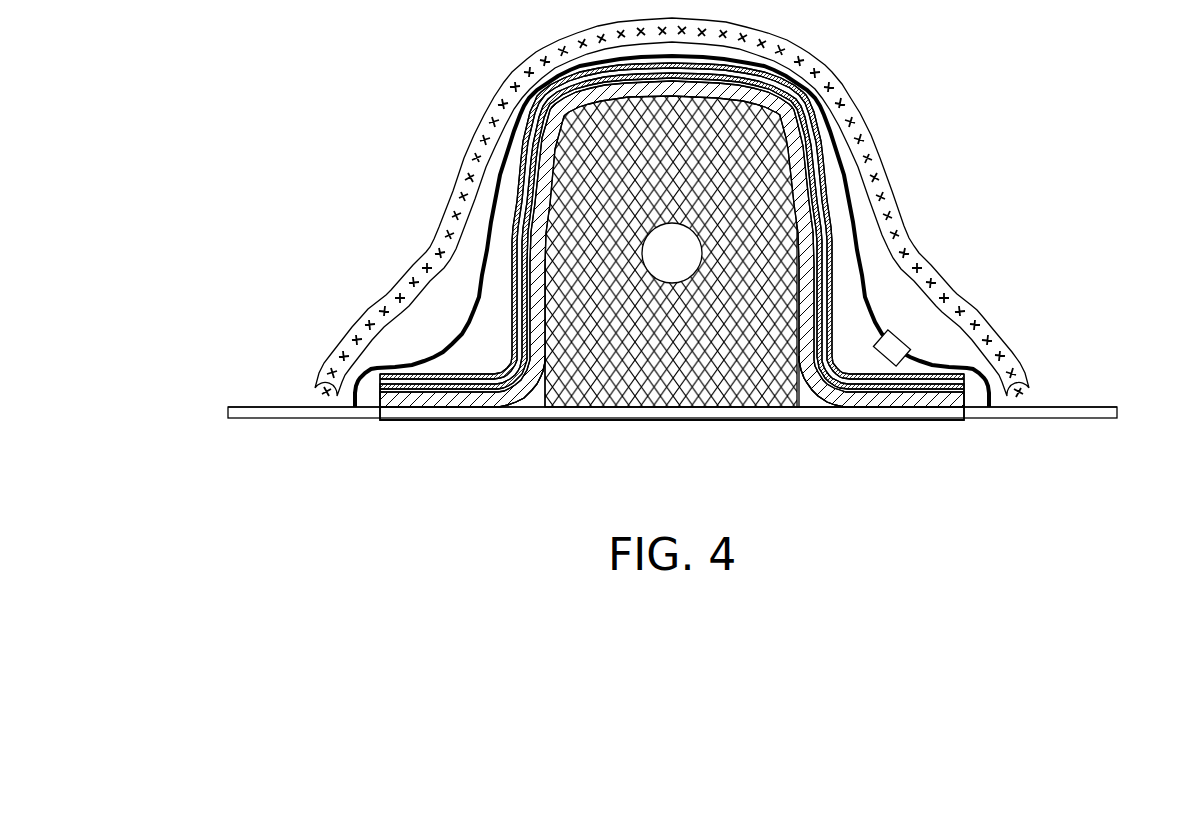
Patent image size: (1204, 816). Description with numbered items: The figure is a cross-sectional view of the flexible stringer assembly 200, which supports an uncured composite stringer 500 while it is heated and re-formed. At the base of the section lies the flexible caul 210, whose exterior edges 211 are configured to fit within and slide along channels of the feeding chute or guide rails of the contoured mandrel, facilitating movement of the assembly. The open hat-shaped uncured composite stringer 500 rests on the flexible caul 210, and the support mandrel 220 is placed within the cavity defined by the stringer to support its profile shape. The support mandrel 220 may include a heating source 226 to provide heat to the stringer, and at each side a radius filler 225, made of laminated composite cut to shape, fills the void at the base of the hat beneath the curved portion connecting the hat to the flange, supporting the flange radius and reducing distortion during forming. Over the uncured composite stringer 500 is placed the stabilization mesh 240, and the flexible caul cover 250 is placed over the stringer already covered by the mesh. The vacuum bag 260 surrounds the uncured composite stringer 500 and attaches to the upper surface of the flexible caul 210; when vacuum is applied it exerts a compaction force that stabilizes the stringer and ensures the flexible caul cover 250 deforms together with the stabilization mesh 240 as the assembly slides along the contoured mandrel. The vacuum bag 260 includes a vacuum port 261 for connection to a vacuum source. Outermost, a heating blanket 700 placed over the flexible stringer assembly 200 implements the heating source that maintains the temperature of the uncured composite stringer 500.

The flexible stringer assembly 200 is at (398, 200).
The heating blanket 700 is at (866, 138).
The vacuum bag 260 is at (859, 253).
The vacuum port 261 is at (895, 348).
The flexible caul cover 250 is at (858, 373).
The stabilization mesh 240 is at (902, 407).
The support mandrel 220 is at (693, 408).
The heating source 226 is at (660, 265).
The radius filler 225 is at (532, 405).
The uncured composite stringer 500 is at (856, 408).
The flexible caul 210 is at (637, 418).
The exterior edges 211 is at (222, 411).